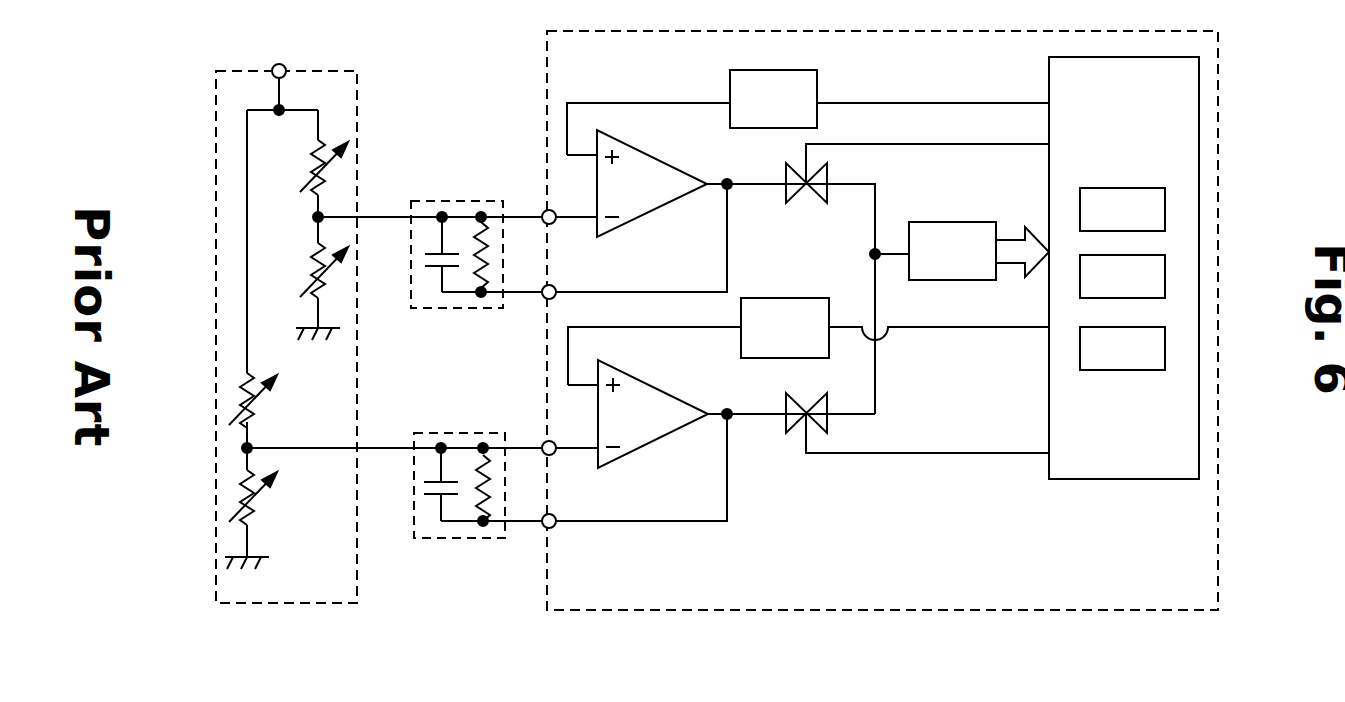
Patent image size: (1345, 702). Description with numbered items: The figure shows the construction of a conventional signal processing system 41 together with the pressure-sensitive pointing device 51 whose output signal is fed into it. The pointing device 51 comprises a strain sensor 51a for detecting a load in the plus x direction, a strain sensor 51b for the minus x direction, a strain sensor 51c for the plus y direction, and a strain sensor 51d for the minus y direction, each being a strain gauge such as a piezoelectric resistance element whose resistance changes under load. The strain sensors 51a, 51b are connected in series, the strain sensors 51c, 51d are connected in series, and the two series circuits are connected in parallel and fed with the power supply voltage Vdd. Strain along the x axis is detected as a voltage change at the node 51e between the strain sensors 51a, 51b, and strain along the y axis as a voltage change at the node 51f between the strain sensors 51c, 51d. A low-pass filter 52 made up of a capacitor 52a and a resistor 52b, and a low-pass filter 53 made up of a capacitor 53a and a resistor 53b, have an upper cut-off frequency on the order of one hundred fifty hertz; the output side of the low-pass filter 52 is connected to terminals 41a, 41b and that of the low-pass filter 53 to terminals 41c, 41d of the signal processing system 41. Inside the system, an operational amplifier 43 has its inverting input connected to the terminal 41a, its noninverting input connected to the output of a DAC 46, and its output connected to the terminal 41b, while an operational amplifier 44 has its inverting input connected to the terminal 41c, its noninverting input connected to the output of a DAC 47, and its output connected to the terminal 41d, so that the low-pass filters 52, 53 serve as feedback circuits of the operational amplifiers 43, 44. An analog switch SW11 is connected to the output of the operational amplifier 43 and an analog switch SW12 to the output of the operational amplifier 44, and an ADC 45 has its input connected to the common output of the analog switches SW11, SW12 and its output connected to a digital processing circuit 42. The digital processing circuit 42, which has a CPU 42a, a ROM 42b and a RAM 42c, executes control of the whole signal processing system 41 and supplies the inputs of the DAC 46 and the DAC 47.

The signal processing system 41 is at (757, 31).
The terminal 41a is at (543, 211).
The terminal 41b is at (543, 298).
The terminal 41c is at (543, 442).
The terminal 41d is at (543, 527).
The digital processing circuit 42 is at (1110, 480).
The CPU 42a is at (1165, 210).
The ROM 42b is at (1165, 278).
The RAM 42c is at (1165, 352).
The operational amplifier 43 is at (637, 150).
The operational amplifier 44 is at (638, 380).
The analog-to-digital converter 45 is at (938, 222).
The digital-to-analog converter 46 is at (782, 70).
The digital-to-analog converter 47 is at (768, 298).
The pressure-sensitive pointing device 51 is at (357, 108).
The strain sensor 51a is at (306, 166).
The strain sensor 51b is at (306, 274).
The strain sensor 51c is at (258, 405).
The strain sensor 51d is at (255, 505).
The node 51e is at (312, 217).
The node 51f is at (242, 450).
The low-pass filter 52 is at (432, 201).
The capacitor 52a is at (432, 268).
The resistor 52b is at (476, 262).
The low-pass filter 53 is at (432, 433).
The capacitor 53a is at (432, 496).
The resistor 53b is at (478, 492).
The analog switch SW11 is at (800, 205).
The analog switch SW12 is at (785, 424).